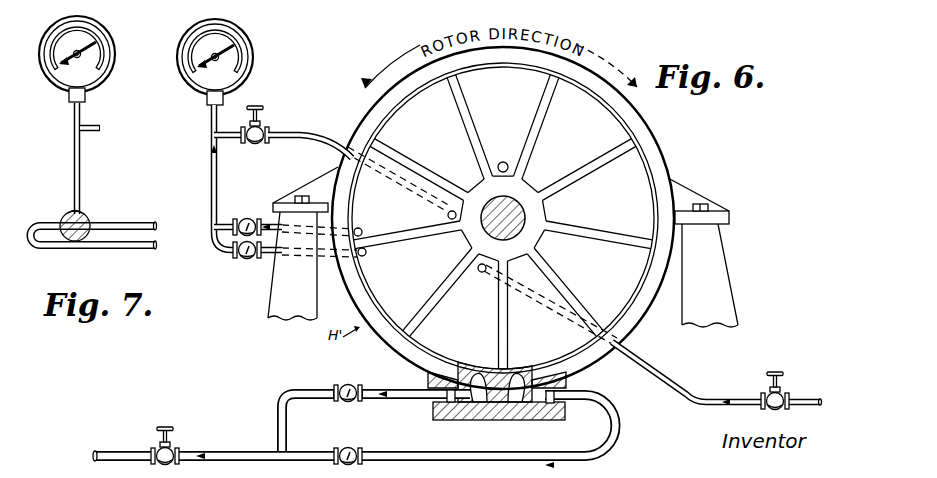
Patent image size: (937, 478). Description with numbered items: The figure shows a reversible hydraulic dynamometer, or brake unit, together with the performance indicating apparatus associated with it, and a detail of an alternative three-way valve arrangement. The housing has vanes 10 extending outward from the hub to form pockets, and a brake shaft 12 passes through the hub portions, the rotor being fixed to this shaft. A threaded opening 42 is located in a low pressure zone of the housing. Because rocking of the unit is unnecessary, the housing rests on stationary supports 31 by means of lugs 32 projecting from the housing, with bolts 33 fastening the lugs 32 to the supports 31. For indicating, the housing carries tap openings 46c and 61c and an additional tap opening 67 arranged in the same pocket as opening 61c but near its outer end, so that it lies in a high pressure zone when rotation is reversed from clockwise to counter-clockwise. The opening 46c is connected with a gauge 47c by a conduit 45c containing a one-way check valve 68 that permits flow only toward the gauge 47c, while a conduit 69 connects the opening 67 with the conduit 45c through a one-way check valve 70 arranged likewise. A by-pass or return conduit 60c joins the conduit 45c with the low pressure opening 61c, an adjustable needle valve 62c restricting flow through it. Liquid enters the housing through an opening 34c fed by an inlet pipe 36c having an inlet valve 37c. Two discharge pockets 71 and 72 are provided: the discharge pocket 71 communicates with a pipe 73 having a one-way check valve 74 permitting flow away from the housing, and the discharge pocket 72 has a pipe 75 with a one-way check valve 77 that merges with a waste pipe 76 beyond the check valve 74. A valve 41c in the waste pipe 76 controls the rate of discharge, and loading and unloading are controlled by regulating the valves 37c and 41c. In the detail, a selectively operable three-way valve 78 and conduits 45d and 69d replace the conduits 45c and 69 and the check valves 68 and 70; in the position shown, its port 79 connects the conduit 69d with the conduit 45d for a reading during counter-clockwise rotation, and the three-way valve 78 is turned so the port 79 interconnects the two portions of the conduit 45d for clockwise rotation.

In FIG. 6, the vanes 10 is at (432, 237).
In FIG. 6, the brake shaft 12 is at (525, 222).
In FIG. 6, the threaded opening 42 is at (503, 162).
In FIG. 6, the tap opening 61c is at (448, 215).
In FIG. 6, the tap opening 67 is at (361, 228).
In FIG. 6, the tap opening 46c is at (366, 256).
In FIG. 6, the opening 34c is at (482, 272).
In FIG. 7, the gauge 47c is at (109, 47).
In FIG. 6, the gauge 47c is at (252, 54).
In FIG. 6, the conduit 45c is at (211, 168).
In FIG. 6, the adjustable needle valve 62c is at (264, 118).
In FIG. 6, the by-pass or return conduit 60c is at (316, 135).
In FIG. 6, the one-way check valve 70 is at (249, 218).
In FIG. 6, the one-way check valve 68 is at (244, 260).
In FIG. 6, the lugs 32 is at (276, 204).
In FIG. 6, the bolts 33 is at (302, 196).
In FIG. 6, the stationary supports 31 is at (270, 295).
In FIG. 6, the conduit 69 is at (332, 258).
In FIG. 6, the inlet pipe 36c is at (678, 386).
In FIG. 6, the inlet valve 37c is at (777, 361).
In FIG. 6, the discharge pocket 72 is at (476, 406).
In FIG. 6, the discharge pocket 71 is at (526, 406).
In FIG. 6, the pipe 75 is at (290, 391).
In FIG. 6, the one-way check valve 77 is at (346, 376).
In FIG. 6, the waste pipe 76 is at (210, 450).
In FIG. 6, the valve 41c is at (149, 440).
In FIG. 6, the one-way check valve 74 is at (354, 448).
In FIG. 6, the pipe 73 is at (630, 432).
In FIG. 7, the conduit 45d is at (81, 152).
In FIG. 7, the conduit 69d is at (128, 222).
In FIG. 7, the three-way valve 78 is at (64, 214).
In FIG. 7, the port 79 is at (83, 212).